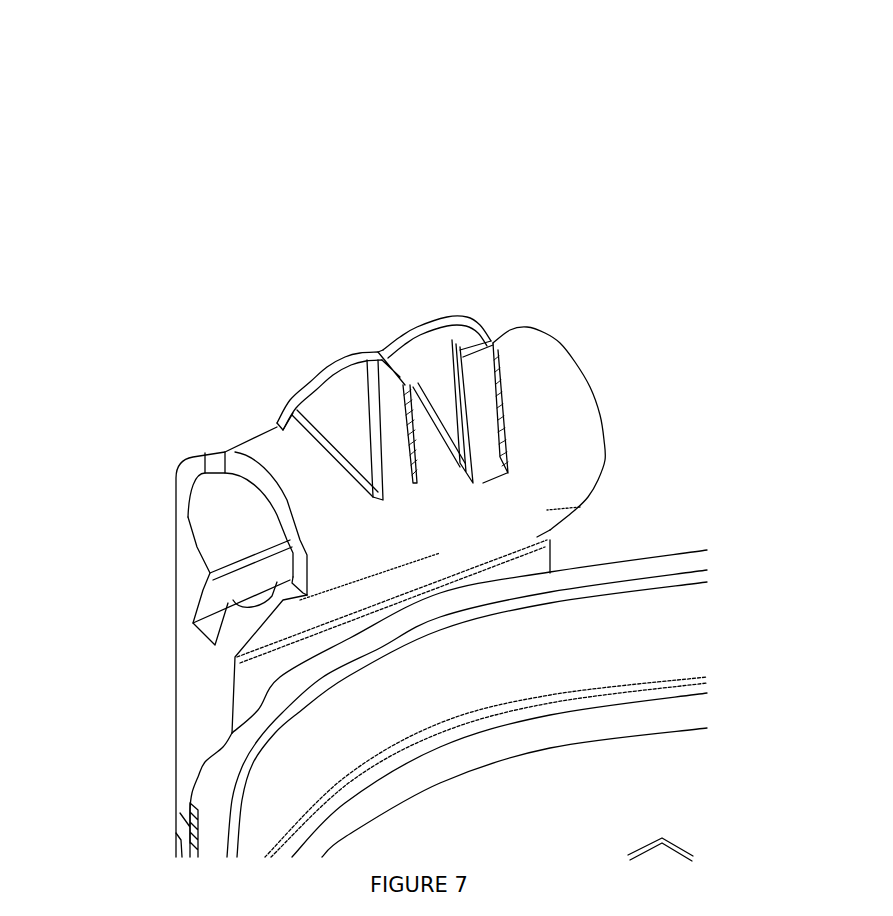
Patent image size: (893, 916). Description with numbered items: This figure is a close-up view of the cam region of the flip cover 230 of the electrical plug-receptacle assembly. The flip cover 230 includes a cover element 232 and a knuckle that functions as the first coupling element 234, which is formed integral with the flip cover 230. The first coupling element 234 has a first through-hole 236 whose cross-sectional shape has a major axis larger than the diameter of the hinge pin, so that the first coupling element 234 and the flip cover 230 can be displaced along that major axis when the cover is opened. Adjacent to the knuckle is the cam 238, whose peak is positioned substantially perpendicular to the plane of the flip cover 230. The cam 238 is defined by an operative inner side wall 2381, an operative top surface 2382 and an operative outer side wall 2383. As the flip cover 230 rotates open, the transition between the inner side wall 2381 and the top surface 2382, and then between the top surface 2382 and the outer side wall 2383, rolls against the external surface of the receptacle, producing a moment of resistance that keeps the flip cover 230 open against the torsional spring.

The flip cover 230 is at (203, 188).
The cover element 232 is at (203, 794).
The first coupling element 234 is at (604, 461).
The first through-hole 236 is at (203, 538).
The cam 238 is at (585, 157).
The operative inner side wall of cam 2381 is at (478, 392).
The operative top surface of cam 2382 is at (465, 320).
The operative outer side wall of cam 2383 is at (423, 320).